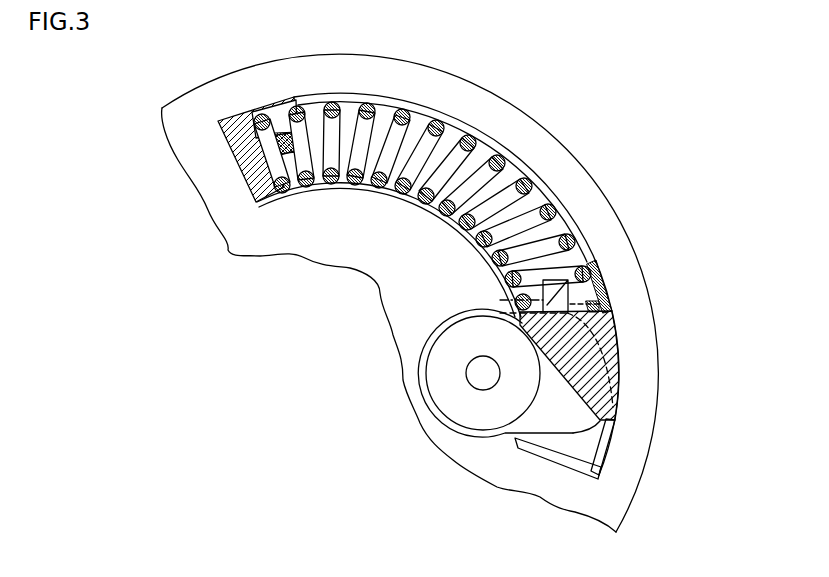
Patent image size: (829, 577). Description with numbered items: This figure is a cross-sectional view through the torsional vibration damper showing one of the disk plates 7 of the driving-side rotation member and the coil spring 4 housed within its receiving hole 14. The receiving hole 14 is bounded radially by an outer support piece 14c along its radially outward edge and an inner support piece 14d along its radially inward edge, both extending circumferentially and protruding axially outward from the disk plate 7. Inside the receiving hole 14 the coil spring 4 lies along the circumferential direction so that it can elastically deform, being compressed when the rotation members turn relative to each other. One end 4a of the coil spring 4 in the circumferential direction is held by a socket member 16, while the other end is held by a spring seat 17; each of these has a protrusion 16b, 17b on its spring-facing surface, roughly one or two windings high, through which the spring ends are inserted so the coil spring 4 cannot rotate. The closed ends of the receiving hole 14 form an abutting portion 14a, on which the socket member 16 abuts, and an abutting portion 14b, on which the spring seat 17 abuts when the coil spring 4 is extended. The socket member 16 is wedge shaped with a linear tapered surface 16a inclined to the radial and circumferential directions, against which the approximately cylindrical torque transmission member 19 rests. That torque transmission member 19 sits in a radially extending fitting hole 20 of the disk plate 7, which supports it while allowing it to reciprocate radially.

The coil spring 4 is at (453, 175).
The one end of coil spring 4a is at (577, 302).
The disk plate 7 is at (337, 249).
The receiving hole 14 is at (457, 172).
The abutting portion 14a is at (567, 456).
The abutting portion 14b is at (228, 117).
The outer support piece 14c is at (490, 147).
The inner support piece 14d is at (436, 200).
The socket member 16 is at (598, 357).
The tapered surface 16a is at (562, 394).
The protrusion 16b is at (590, 268).
The spring seat 17 is at (240, 127).
The protrusion 17b is at (283, 133).
The torque transmission member 19 is at (452, 400).
The fitting hole 20 is at (547, 422).